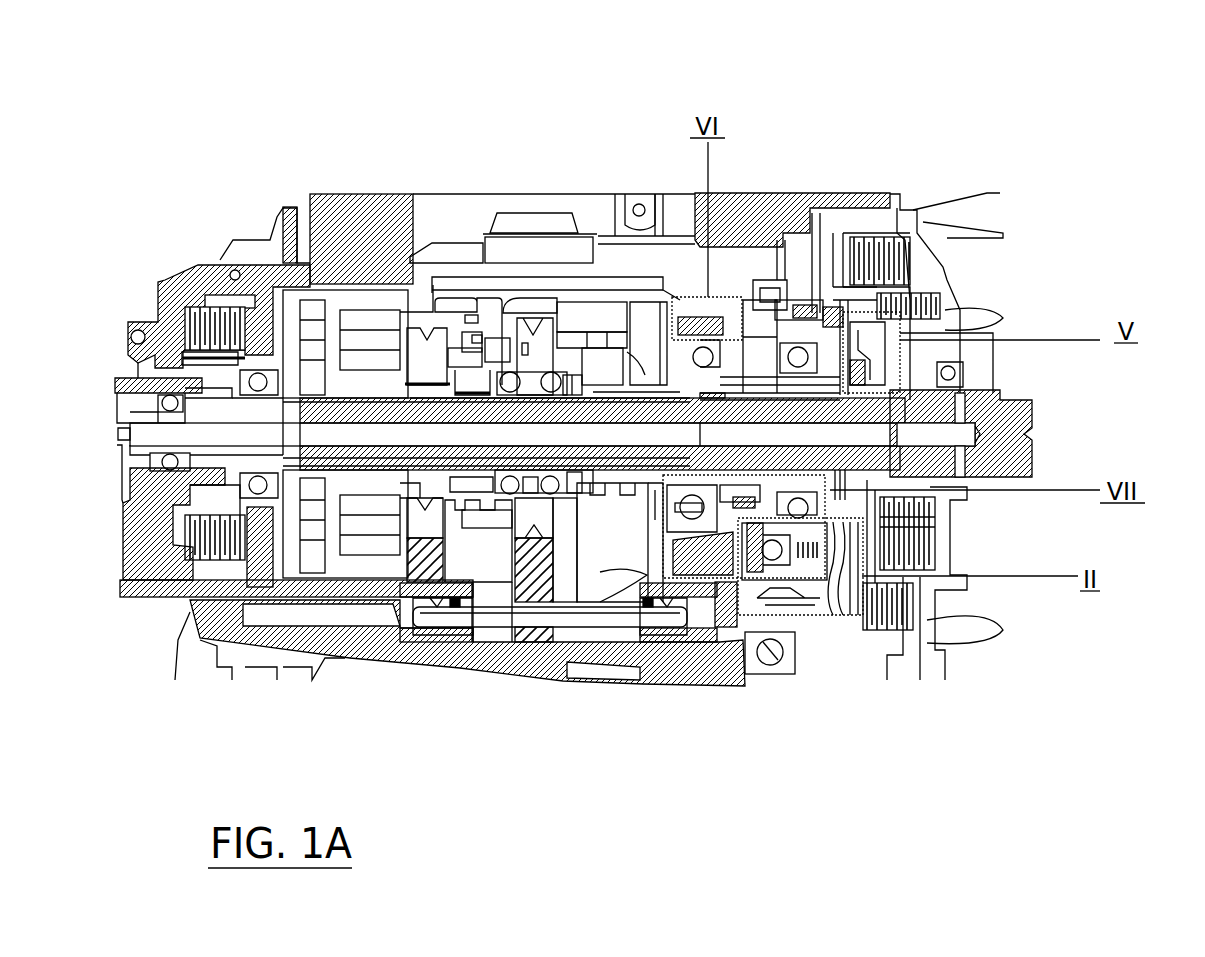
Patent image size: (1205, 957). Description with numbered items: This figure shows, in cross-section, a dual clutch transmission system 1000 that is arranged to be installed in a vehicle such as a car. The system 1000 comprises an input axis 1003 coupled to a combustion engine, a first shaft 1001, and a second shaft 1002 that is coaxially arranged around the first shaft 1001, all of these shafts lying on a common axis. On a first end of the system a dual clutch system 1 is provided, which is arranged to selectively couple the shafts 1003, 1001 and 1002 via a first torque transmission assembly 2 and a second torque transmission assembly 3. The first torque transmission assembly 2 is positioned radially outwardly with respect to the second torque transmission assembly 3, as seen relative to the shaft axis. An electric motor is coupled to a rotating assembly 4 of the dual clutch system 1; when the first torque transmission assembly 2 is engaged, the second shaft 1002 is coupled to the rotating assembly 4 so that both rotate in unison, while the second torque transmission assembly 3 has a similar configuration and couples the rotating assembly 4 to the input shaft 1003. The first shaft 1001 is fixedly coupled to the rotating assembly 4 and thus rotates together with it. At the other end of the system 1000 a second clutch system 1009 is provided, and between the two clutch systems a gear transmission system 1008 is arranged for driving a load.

The dual clutch system 1 is at (939, 226).
The first torque transmission assembly 2 is at (875, 243).
The second torque transmission assembly 3 is at (920, 313).
The rotating assembly 4 is at (860, 625).
The transmission system 1000 is at (605, 170).
The first shaft 1001 is at (500, 410).
The second shaft 1002 is at (757, 400).
The input axis 1003 is at (1012, 410).
The gear transmission system 1008 is at (805, 775).
The second clutch system 1009 is at (176, 290).